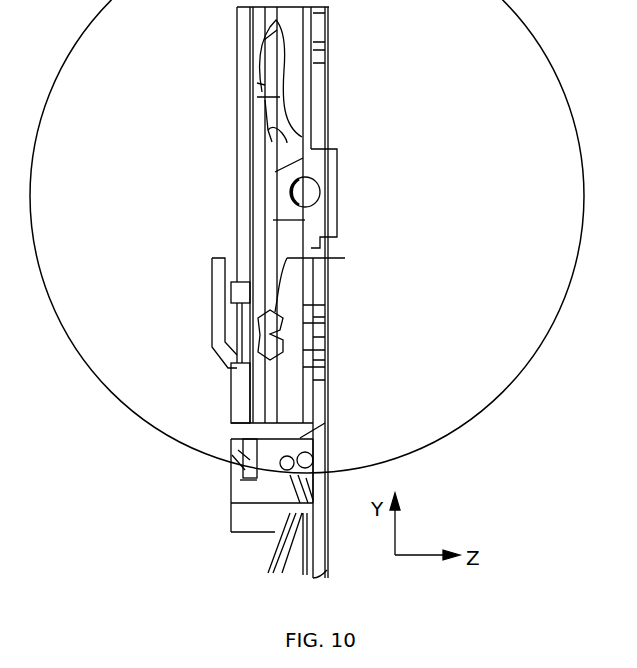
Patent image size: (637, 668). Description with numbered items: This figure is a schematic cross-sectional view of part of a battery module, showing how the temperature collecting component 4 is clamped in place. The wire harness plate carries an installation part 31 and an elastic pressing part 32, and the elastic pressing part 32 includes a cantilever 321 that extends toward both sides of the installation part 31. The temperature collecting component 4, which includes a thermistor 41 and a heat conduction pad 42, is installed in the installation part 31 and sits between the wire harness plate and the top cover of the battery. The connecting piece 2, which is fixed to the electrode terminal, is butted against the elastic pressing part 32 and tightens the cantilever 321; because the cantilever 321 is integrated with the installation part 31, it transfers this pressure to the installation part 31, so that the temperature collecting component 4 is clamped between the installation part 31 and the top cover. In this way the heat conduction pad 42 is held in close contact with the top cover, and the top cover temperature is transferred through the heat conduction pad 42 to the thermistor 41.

The connecting piece 2 is at (345, 258).
The installation part 31 is at (290, 143).
The elastic pressing part 32 is at (133, 138).
The cantilever 321 is at (258, 85).
The temperature collecting component 4 is at (417, 142).
The thermistor 41 is at (320, 193).
The heat conduction pad 42 is at (325, 168).